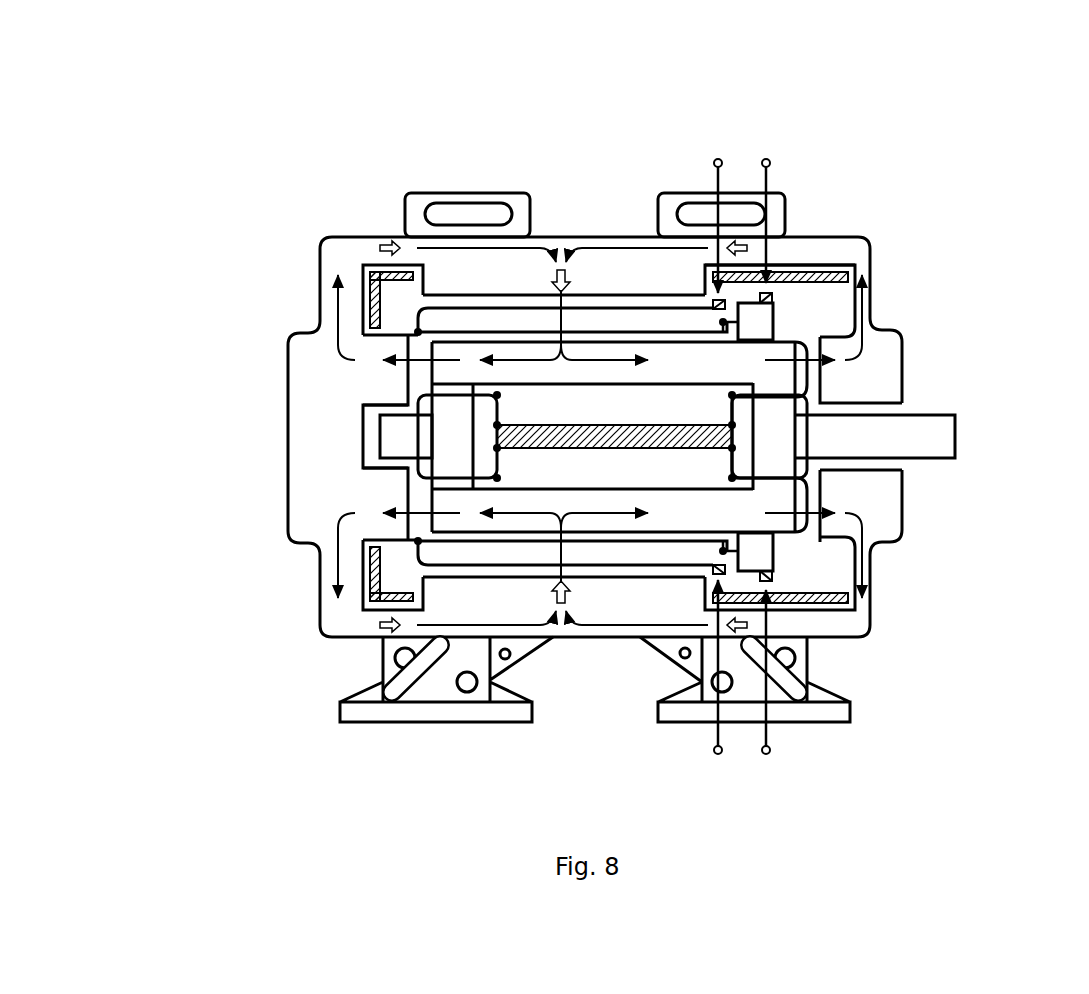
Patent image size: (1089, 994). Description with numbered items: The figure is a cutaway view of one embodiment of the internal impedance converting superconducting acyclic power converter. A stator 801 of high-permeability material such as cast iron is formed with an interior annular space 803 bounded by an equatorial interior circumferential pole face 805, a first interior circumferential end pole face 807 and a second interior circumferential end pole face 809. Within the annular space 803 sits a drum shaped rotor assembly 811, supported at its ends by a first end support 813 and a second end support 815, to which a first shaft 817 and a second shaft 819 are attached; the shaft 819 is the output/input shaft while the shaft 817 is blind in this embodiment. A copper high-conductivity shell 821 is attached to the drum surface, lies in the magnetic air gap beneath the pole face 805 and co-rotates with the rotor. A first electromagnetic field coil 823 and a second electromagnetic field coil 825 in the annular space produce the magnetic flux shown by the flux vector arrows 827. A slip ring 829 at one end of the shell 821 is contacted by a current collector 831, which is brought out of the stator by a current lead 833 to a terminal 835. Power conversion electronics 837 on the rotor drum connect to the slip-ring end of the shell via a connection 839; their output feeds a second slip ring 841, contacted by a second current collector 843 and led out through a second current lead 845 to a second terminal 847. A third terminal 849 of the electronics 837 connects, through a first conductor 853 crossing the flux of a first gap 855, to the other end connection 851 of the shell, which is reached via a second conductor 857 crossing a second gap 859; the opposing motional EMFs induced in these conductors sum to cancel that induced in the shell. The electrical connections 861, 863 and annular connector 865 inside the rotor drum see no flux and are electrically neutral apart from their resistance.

The stator 801 is at (622, 250).
The interior annular space 803 is at (387, 306).
The equatorial interior circumferential pole face 805 is at (462, 262).
The first interior circumferential end pole face 807 is at (845, 377).
The second interior circumferential end pole face 809 is at (357, 384).
The drum shaped rotor assembly 811 is at (663, 362).
The first end support 813 is at (783, 462).
The second end support 815 is at (410, 485).
The first shaft 817 is at (397, 443).
The second shaft 819 is at (903, 440).
The high-conductivity shell 821 is at (487, 323).
The first electromagnetic field coil 823 is at (858, 266).
The second electromagnetic field coil 825 is at (395, 298).
The flux vector arrows 827 is at (567, 255).
The slip ring 829 is at (703, 293).
The current collector 831 is at (712, 296).
The current lead 833 is at (706, 263).
The terminal 835 is at (717, 162).
The power conversion electronics 837 is at (777, 300).
The connection 839 is at (741, 300).
The second slip ring 841 is at (756, 308).
The second current collector 843 is at (727, 298).
The second current lead 845 is at (763, 292).
The second terminal 847 is at (745, 300).
The third terminal 849 is at (780, 324).
The other end connection 851 is at (357, 335).
The first conductor 853 is at (800, 352).
The first gap 855 is at (800, 382).
The second conductor 857 is at (416, 378).
The second gap 859 is at (420, 387).
The electrical connection 861 is at (455, 457).
The electrical connection 863 is at (733, 396).
The annular connector 865 is at (683, 455).